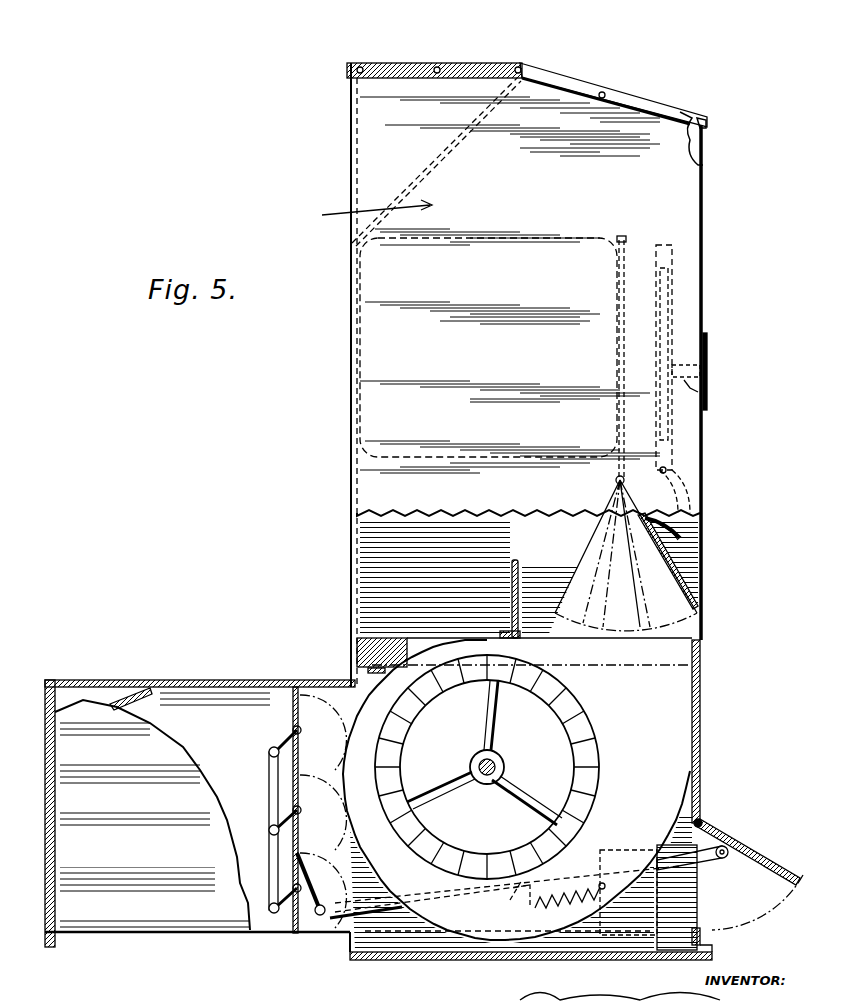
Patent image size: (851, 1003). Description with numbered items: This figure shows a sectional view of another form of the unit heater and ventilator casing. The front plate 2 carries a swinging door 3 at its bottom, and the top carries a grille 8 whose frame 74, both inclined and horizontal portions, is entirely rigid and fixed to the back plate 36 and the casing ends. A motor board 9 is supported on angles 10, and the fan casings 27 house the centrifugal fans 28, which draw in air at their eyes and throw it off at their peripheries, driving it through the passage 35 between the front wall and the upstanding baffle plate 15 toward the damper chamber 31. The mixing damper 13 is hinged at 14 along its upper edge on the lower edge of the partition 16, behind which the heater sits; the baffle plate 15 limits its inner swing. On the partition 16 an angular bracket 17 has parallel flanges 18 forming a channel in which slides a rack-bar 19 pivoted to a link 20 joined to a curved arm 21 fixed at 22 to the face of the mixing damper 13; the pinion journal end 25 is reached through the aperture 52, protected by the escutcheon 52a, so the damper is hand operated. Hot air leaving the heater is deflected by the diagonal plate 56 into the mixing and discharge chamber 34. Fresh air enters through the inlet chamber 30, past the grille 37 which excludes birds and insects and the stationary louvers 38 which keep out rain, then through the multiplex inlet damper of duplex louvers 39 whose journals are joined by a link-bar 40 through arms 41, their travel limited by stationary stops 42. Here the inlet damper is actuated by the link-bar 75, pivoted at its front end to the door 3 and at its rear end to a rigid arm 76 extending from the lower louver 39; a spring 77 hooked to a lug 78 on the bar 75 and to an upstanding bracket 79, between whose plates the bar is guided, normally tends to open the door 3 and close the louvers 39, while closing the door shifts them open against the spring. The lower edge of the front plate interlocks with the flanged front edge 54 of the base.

The front plate of the casing 2 is at (704, 500).
The hinged door 3 is at (755, 858).
The grille 8 is at (690, 118).
The motor board 9 is at (385, 638).
The angles 10 is at (357, 667).
The mixing damper 13 is at (698, 573).
The hinge of the mixing damper 14 is at (616, 480).
The baffle plate 15 is at (510, 596).
The partition 16 is at (618, 420).
The angular bracket 17 is at (617, 262).
The parallel flanges 18 is at (672, 252).
The rack-bar 19 is at (668, 292).
The link 20 is at (665, 440).
The curved arm 21 is at (692, 528).
The fixing point of the curved arm 22 is at (703, 548).
The end of the pinion journal 25 is at (700, 394).
The fan casings 27 is at (700, 790).
The centrifugal fans 28 is at (586, 727).
The inlet chamber 30 is at (217, 712).
The damper chamber 31 is at (528, 573).
The mixing and discharge chamber 34 is at (364, 213).
The passage 35 is at (672, 659).
The rear wall of the casing 36 is at (340, 132).
The grille 37 is at (52, 692).
The stationary louvers 38 is at (128, 698).
The duplex louvers 39 is at (330, 743).
The link-bar 40 is at (268, 785).
The arms 41 is at (270, 746).
The stationary stops 42 is at (296, 690).
The aperture 52 is at (702, 372).
The escutcheon 52a is at (708, 345).
The front edge of the base 54 is at (703, 932).
The deflector plate 56 is at (448, 153).
The grille frame 74 is at (538, 78).
The link-bar 75 is at (430, 918).
The rigid arm 76 is at (309, 900).
The spring 77 is at (563, 958).
The lug 78 is at (512, 900).
The upstanding bracket 79 is at (625, 952).